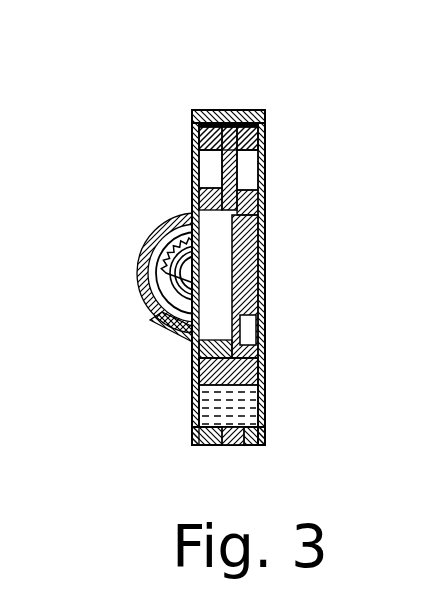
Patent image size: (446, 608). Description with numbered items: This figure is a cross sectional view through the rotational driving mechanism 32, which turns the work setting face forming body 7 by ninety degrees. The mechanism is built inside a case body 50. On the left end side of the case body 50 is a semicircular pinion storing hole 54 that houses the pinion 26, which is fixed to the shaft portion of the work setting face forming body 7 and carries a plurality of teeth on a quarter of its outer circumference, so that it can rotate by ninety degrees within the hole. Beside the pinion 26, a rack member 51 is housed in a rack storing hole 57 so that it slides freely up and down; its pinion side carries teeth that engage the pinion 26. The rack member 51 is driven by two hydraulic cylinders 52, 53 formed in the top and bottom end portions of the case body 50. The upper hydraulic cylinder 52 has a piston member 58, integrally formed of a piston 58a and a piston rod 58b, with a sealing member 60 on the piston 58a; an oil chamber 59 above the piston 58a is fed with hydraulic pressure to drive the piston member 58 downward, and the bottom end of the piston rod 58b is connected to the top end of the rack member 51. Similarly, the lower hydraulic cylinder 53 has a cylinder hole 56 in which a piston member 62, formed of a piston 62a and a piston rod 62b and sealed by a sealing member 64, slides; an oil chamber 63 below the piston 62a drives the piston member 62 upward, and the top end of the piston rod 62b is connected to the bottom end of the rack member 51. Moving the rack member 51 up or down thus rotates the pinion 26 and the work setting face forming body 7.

The work setting face forming body 7 is at (140, 268).
The pinion 26 is at (152, 246).
The rotational driving mechanism 32 is at (280, 111).
The case body 50 is at (263, 153).
The rack member 51 is at (264, 242).
The hydraulic cylinder 52 is at (186, 92).
The hydraulic cylinder 53 is at (276, 432).
The pinion storing hole 54 is at (165, 318).
The cylinder hole 56 is at (199, 447).
The rack storing hole 57 is at (265, 339).
The piston member 58 is at (86, 112).
The piston 58a is at (195, 138).
The piston rod 58b is at (194, 172).
The oil chamber 59 is at (238, 110).
The sealing member 60 is at (263, 140).
The piston member 62 is at (86, 366).
The piston 62a is at (197, 402).
The piston rod 62b is at (194, 352).
The oil chamber 63 is at (232, 447).
The sealing member 64 is at (264, 375).